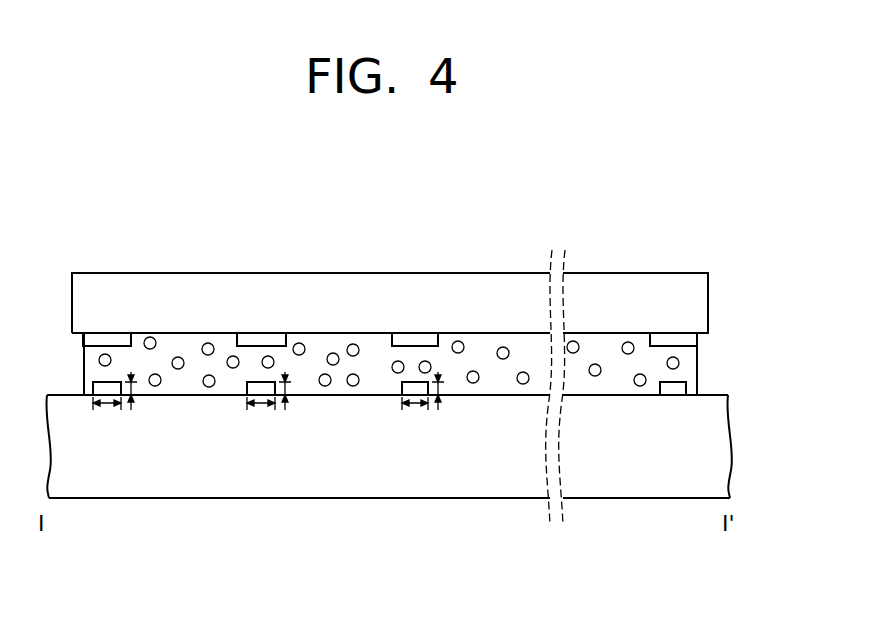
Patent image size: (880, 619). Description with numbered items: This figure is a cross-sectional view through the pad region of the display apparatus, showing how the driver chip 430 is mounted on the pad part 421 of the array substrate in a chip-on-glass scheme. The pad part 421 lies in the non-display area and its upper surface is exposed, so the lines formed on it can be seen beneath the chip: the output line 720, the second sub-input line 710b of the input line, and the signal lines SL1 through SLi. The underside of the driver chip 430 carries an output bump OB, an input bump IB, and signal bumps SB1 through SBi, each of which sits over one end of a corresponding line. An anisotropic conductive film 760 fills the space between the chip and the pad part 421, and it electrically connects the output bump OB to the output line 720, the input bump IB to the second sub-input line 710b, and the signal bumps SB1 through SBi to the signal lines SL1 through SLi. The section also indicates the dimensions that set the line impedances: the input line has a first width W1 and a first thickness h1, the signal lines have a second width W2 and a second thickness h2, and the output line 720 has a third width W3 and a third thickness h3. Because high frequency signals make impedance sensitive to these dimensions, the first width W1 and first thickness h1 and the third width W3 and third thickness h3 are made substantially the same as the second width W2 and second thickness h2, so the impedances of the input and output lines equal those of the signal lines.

The driver chip 430 is at (697, 302).
The anisotropic conductive film 760 is at (697, 362).
The pad part 421 is at (712, 439).
The output line 720 is at (93, 390).
The second sub-input line 710b is at (247, 390).
The first signal line SL1 is at (402, 391).
The i-th signal line SLi is at (660, 391).
The output bump OB is at (108, 340).
The input bump IB is at (261, 340).
The first signal bump SB1 is at (419, 340).
The i-th signal bump SBi is at (669, 340).
The first width W1 is at (262, 415).
The second width W2 is at (417, 415).
The third width W3 is at (108, 415).
The first thickness h1 is at (294, 415).
The second thickness h2 is at (448, 415).
The third thickness h3 is at (140, 415).